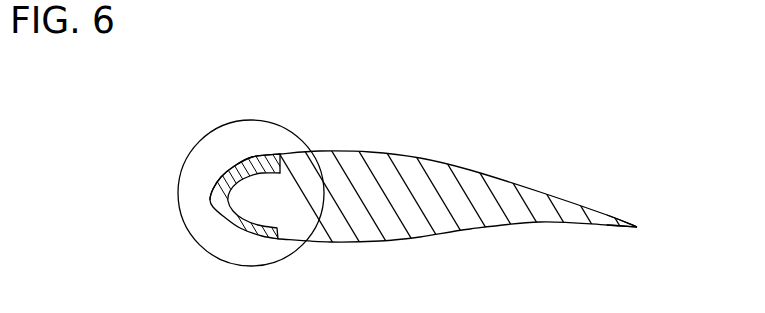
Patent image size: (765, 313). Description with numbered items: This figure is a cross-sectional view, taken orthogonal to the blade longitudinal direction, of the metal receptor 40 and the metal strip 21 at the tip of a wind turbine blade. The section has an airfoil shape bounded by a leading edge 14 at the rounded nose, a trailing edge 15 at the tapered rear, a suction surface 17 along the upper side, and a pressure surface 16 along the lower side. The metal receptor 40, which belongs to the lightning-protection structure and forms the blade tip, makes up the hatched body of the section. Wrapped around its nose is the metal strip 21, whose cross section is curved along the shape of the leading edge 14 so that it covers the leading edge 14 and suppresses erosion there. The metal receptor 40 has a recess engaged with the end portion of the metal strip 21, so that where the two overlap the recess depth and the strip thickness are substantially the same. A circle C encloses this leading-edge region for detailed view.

The leading edge 14 is at (212, 198).
The trailing edge 15 is at (637, 227).
The pressure surface 16 is at (385, 243).
The suction surface 17 is at (384, 153).
The metal strip 21 is at (250, 158).
The metal receptor 40 is at (482, 193).
The detail region C is at (183, 167).